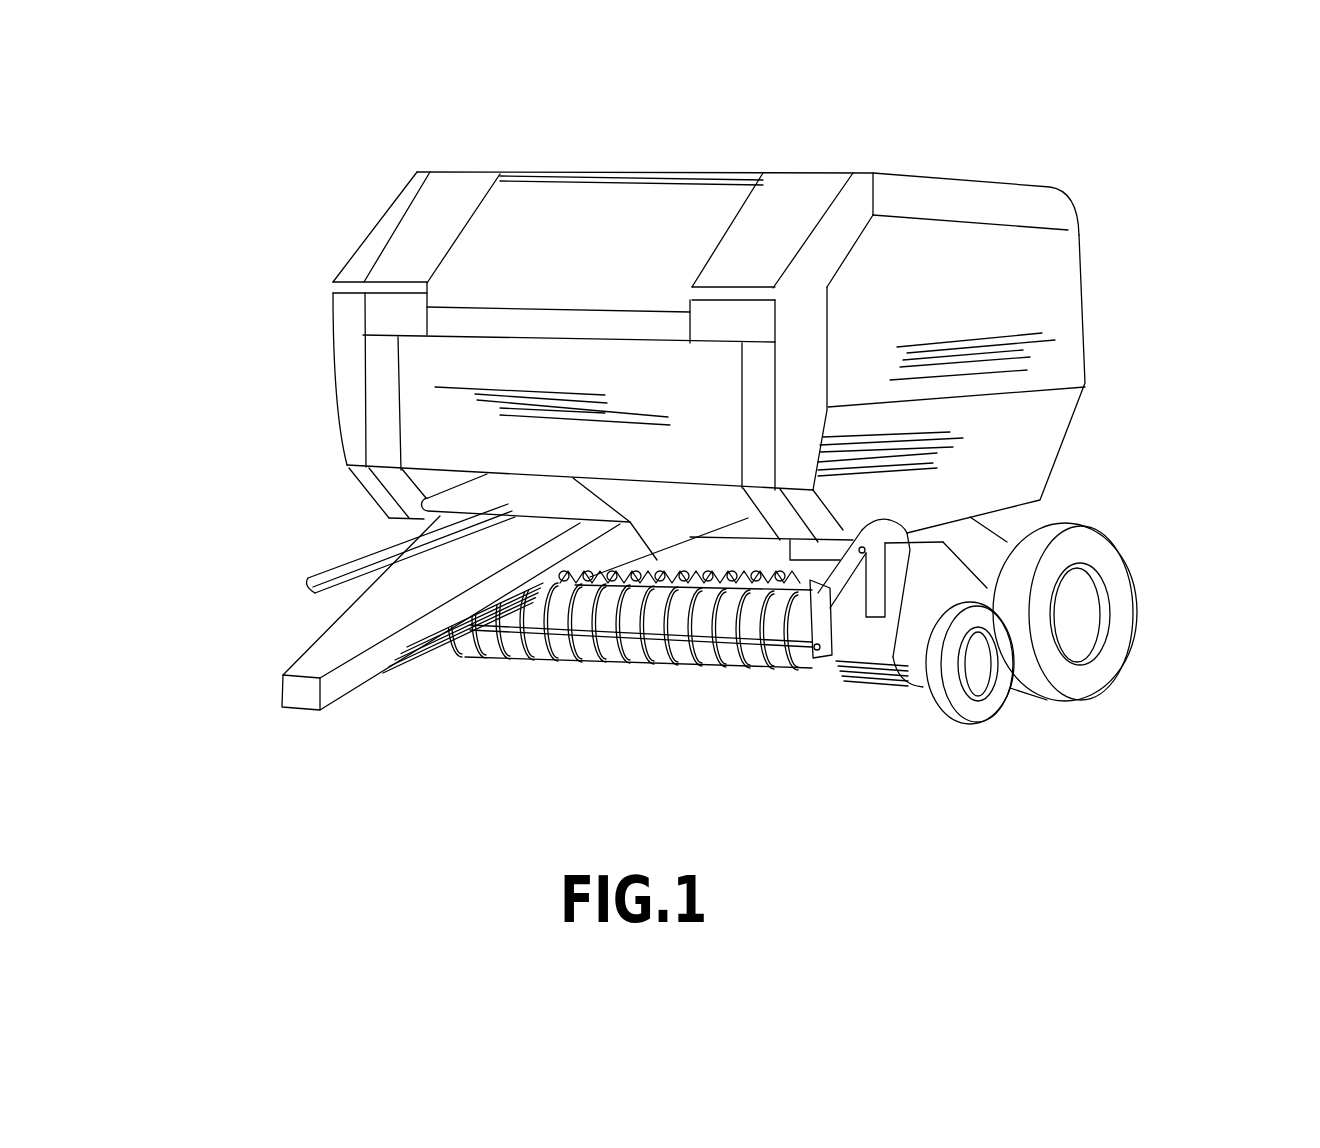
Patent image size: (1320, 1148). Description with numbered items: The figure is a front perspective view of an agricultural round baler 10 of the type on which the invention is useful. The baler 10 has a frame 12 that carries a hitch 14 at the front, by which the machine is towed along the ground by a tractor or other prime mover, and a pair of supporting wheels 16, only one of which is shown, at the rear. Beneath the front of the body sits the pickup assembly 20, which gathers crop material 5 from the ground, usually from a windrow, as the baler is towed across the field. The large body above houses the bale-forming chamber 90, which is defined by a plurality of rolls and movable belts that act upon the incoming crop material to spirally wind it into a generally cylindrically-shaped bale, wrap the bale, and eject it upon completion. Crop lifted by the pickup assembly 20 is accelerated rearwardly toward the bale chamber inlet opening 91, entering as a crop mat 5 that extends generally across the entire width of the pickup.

The round baler 10 is at (1085, 165).
The bale-forming chamber 90 is at (520, 245).
The crop material 5 is at (682, 545).
The frame 12 is at (1005, 524).
The hitch 14 is at (330, 654).
The supporting wheels 16 is at (1102, 667).
The pickup assembly 20 is at (565, 712).
The bale chamber inlet opening 91 is at (640, 632).